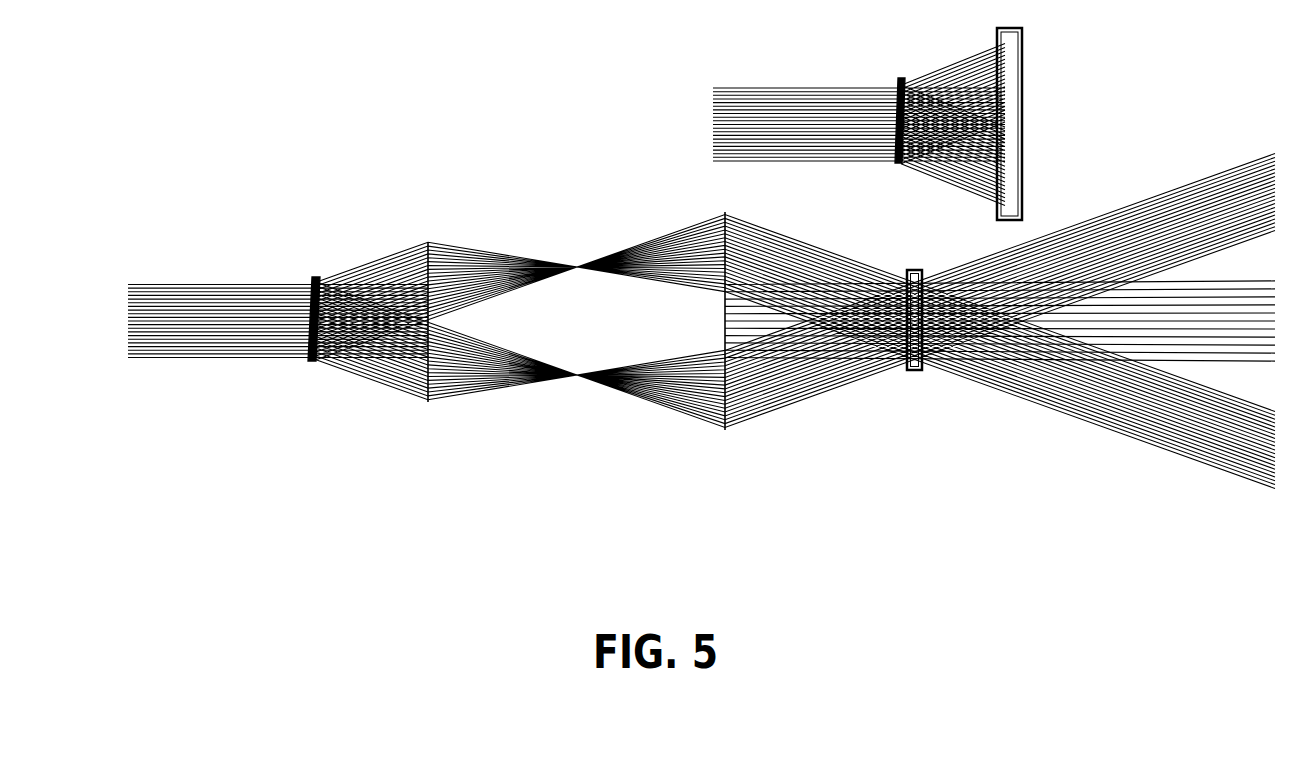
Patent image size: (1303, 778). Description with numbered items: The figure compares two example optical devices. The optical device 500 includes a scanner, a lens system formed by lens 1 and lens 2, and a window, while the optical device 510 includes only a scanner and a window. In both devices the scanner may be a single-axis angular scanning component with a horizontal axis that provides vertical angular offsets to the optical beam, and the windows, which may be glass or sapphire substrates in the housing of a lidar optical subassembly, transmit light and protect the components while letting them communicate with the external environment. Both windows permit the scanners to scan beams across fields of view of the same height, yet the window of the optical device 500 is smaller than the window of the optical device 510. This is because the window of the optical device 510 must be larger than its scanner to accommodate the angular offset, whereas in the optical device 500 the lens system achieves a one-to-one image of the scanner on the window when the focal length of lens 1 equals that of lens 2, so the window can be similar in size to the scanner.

The optical device 500 is at (701, 315).
The optical device 510 is at (690, 59).
The lens 1 is at (431, 305).
The lens 2 is at (727, 304).